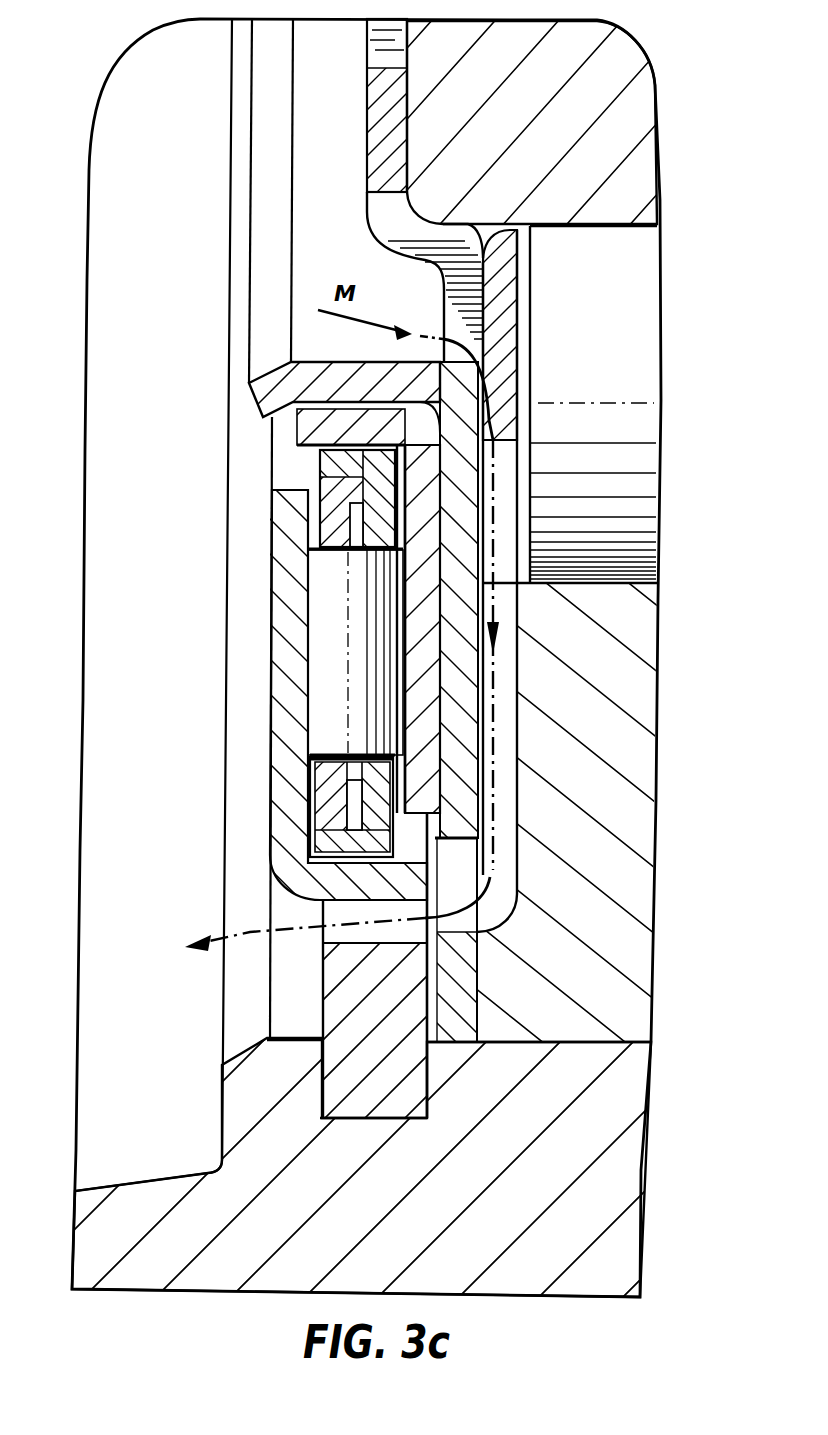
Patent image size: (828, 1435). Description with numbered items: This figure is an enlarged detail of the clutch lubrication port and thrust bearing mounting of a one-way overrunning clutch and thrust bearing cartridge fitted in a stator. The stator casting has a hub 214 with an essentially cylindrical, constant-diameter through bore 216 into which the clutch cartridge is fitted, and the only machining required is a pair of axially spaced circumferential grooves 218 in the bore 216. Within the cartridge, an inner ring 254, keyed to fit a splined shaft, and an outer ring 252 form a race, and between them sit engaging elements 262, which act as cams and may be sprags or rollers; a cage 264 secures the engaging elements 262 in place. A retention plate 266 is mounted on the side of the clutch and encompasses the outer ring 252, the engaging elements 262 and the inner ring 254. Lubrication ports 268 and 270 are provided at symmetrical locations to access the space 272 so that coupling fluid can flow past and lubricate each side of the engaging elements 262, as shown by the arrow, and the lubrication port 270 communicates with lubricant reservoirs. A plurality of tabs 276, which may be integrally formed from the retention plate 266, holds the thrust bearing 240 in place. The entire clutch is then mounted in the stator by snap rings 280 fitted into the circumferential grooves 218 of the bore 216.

The hub 214 is at (595, 1172).
The through bore 216 is at (615, 1040).
The circumferential grooves 218 is at (377, 1120).
The thrust bearing 240 is at (270, 692).
The outer ring 252 is at (618, 805).
The inner ring 254 is at (630, 166).
The engaging elements 262 is at (613, 353).
The cage 264 is at (505, 297).
The retention plate 266 is at (378, 137).
The lubrication port 268 is at (443, 296).
The lubrication port 270 is at (347, 932).
The space 272 is at (500, 884).
The tabs 276 is at (272, 386).
The snap rings 280 is at (397, 1092).